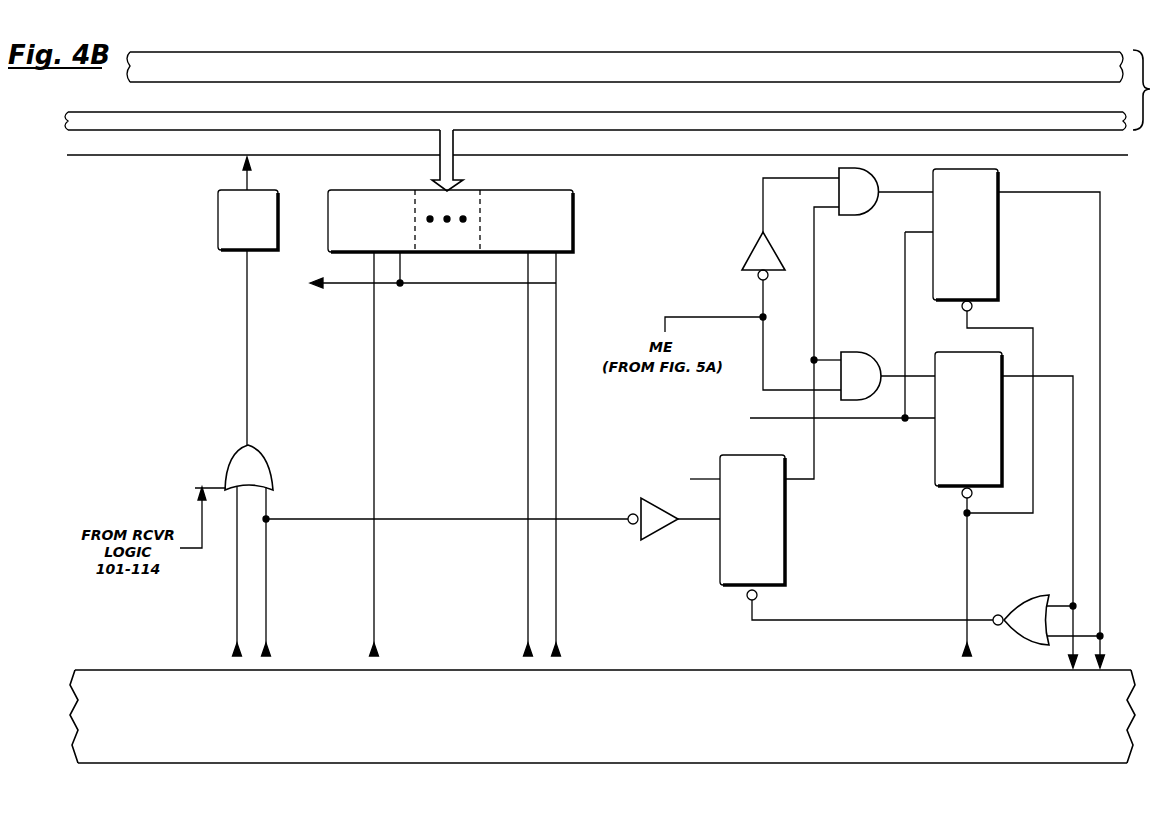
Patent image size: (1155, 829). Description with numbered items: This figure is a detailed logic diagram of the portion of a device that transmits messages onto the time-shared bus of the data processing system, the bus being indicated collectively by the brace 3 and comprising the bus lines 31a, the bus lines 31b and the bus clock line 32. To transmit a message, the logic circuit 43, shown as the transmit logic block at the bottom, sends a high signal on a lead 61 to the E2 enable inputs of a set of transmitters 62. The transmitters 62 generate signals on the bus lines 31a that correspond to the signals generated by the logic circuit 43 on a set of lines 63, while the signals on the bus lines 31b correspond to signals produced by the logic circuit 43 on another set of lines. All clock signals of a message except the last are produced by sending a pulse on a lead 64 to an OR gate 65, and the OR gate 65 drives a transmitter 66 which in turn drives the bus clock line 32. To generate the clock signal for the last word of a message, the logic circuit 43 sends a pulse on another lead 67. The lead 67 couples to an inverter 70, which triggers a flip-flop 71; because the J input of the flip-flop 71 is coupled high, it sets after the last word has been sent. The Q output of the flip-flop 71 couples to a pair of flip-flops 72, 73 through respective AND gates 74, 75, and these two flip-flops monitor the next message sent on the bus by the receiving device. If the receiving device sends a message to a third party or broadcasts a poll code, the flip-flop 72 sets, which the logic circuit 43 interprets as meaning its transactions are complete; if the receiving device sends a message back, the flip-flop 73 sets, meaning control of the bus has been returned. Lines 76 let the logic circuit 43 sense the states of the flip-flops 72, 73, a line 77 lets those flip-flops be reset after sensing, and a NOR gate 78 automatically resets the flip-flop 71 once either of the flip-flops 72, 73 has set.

The bus 3 is at (1144, 90).
The bus lines 31a is at (604, 113).
The bus lines 31b is at (612, 52).
The bus clock line 32 is at (600, 155).
The logic circuit 43 is at (613, 764).
The lead 61 is at (323, 290).
The transmitters 62 is at (573, 208).
The lines 63 is at (375, 430).
The lead 64 is at (237, 575).
The OR gate 65 is at (262, 456).
The transmitter 66 is at (218, 205).
The lead 67 is at (266, 575).
The inverter 70 is at (655, 541).
The flip-flop 71 is at (785, 525).
The flip-flop 72 is at (998, 232).
The flip-flop 73 is at (935, 438).
The AND gate 74 is at (853, 216).
The AND gate 75 is at (845, 352).
The lines 76 is at (1100, 512).
The line 77 is at (967, 548).
The NOR gate 78 is at (1027, 594).